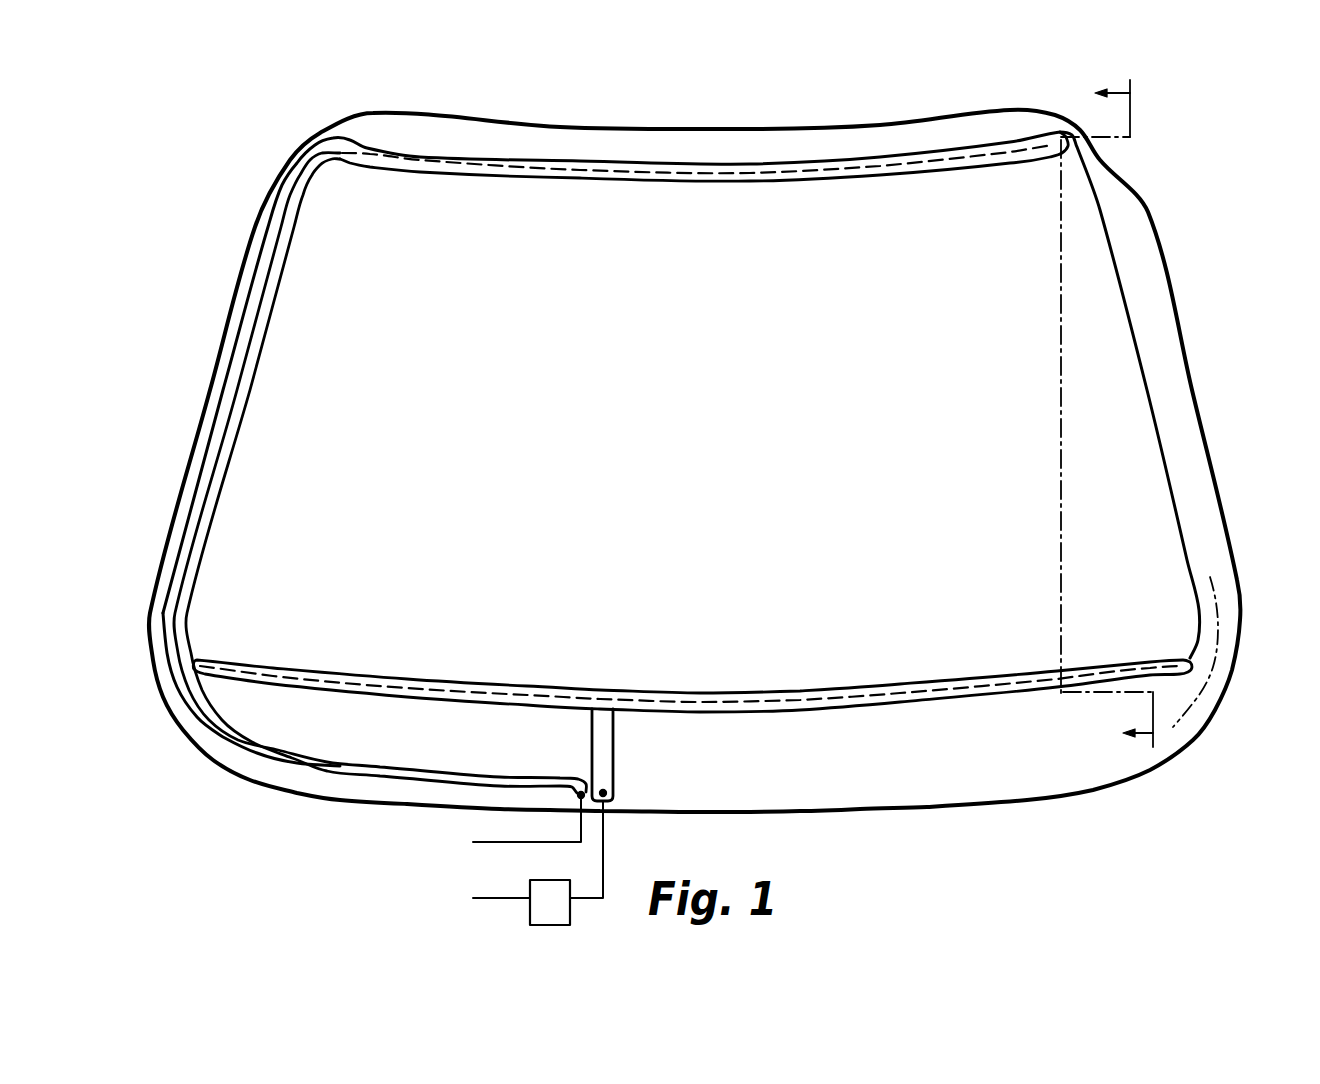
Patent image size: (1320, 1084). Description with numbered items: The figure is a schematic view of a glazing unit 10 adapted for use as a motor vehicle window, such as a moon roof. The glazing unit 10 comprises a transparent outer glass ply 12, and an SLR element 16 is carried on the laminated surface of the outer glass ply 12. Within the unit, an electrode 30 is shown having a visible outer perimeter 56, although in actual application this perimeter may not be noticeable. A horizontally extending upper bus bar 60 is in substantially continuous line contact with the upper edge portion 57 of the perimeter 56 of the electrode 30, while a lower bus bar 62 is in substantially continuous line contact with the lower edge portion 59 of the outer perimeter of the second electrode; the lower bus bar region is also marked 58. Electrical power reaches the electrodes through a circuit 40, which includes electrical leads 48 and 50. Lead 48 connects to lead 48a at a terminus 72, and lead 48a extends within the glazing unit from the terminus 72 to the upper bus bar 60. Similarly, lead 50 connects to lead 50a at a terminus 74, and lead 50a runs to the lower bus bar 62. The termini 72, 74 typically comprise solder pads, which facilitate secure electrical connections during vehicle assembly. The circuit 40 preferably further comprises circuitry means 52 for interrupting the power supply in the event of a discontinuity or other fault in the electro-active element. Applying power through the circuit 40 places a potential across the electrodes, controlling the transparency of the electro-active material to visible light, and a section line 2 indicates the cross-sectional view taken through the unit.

The glazing unit 10 is at (814, 125).
The outer glass ply 12 is at (1180, 457).
The SLR element 16 is at (1218, 630).
The electrode 30 is at (1112, 317).
The outer perimeter 56 is at (655, 172).
The upper edge portion 57 is at (592, 168).
The upper bus bar 60 is at (927, 152).
The lower bus bar 58 is at (764, 709).
The lower bus bar 62 is at (573, 698).
The lower edge portion 59 is at (963, 695).
The lead 48a is at (320, 762).
The lead 50a is at (605, 745).
The terminus 72 is at (577, 798).
The terminus 74 is at (612, 795).
The circuit 40 is at (616, 838).
The electrical lead 48 is at (473, 842).
The electrical lead 50 is at (473, 898).
The circuitry means 52 is at (555, 880).
The section line 2- 2 is at (1122, 415).